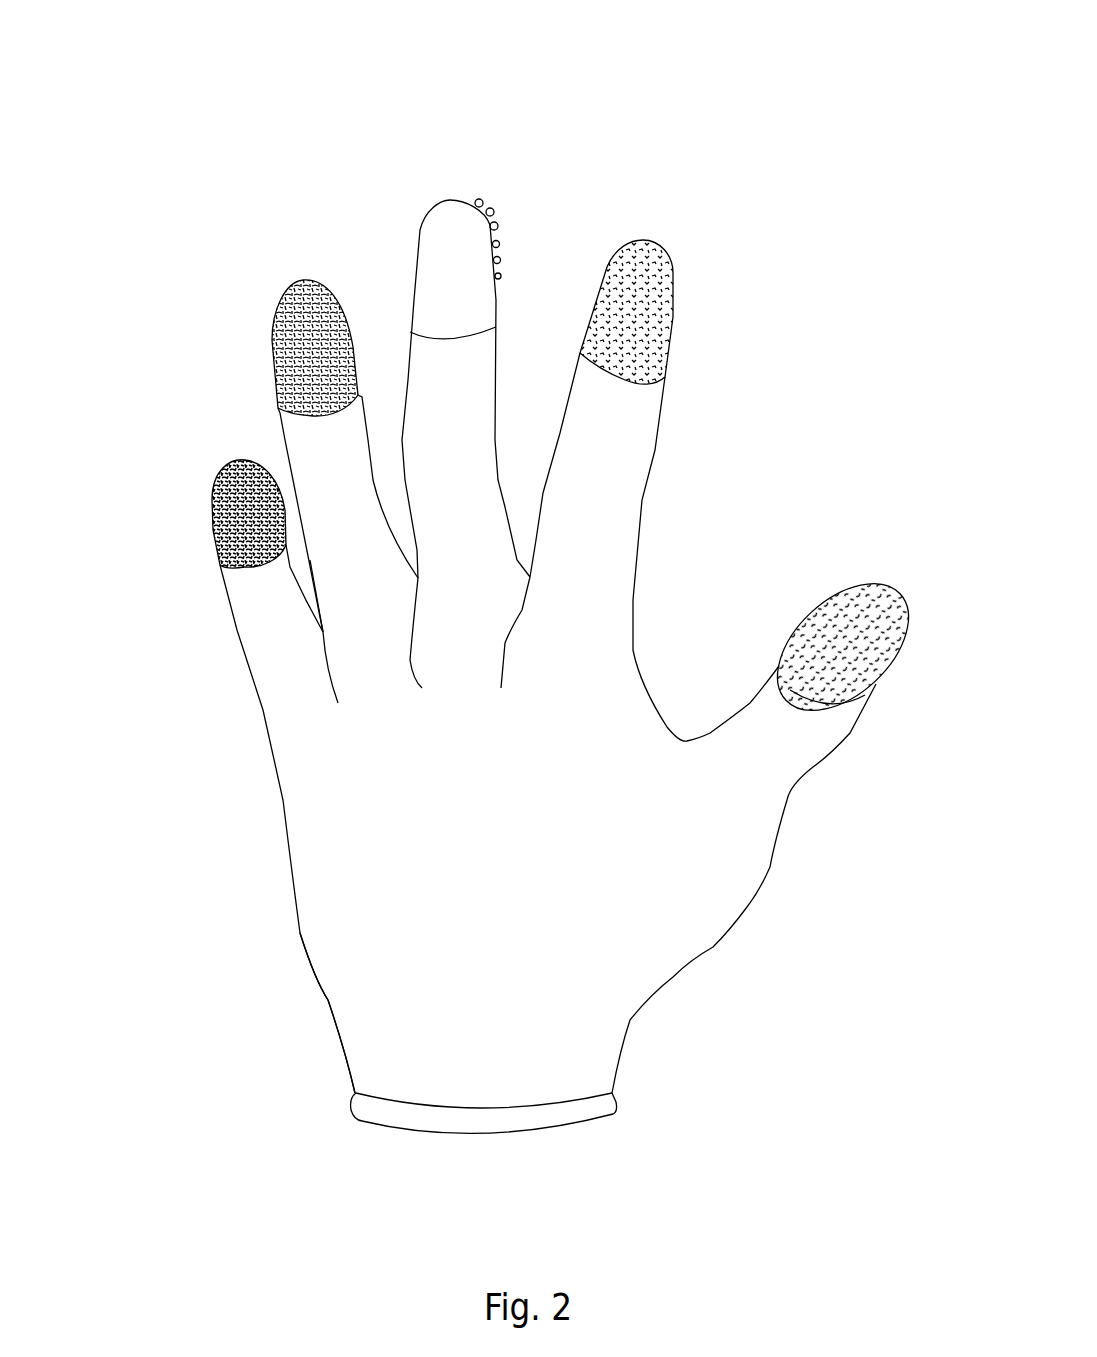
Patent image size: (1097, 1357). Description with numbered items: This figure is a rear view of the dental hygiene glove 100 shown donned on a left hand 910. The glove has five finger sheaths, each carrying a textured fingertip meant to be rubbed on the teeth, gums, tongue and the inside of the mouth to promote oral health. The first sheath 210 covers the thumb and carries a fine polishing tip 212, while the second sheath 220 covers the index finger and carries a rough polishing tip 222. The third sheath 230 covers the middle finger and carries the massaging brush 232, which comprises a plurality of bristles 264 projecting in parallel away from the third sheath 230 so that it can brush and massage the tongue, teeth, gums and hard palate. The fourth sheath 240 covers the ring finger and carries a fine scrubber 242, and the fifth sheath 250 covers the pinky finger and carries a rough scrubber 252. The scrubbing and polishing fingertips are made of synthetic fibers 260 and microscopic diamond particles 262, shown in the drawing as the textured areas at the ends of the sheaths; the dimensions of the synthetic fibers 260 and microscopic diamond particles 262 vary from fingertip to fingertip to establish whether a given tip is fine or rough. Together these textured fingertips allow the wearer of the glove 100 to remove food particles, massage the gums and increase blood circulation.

The dental hygiene glove 100 is at (146, 182).
The left hand 910 is at (139, 955).
The first sheath 210 is at (803, 772).
The fine polishing tip 212 is at (865, 639).
The second sheath 220 is at (650, 479).
The rough polishing tip 222 is at (648, 293).
The third sheath 230 is at (523, 399).
The massaging brush 232 is at (448, 227).
The fourth sheath 240 is at (310, 474).
The fine scrubber 242 is at (280, 297).
The fifth sheath 250 is at (240, 585).
The rough scrubber 252 is at (210, 519).
The synthetic fibers 260 is at (843, 677).
The microscopic diamond particles 262 is at (826, 628).
The bristles 264 is at (486, 218).